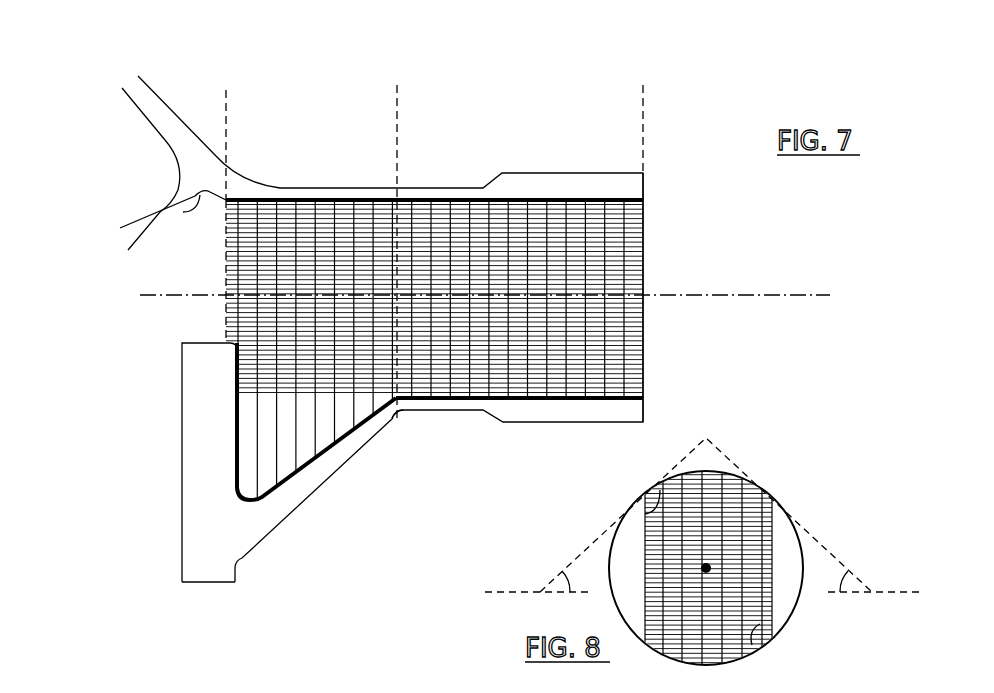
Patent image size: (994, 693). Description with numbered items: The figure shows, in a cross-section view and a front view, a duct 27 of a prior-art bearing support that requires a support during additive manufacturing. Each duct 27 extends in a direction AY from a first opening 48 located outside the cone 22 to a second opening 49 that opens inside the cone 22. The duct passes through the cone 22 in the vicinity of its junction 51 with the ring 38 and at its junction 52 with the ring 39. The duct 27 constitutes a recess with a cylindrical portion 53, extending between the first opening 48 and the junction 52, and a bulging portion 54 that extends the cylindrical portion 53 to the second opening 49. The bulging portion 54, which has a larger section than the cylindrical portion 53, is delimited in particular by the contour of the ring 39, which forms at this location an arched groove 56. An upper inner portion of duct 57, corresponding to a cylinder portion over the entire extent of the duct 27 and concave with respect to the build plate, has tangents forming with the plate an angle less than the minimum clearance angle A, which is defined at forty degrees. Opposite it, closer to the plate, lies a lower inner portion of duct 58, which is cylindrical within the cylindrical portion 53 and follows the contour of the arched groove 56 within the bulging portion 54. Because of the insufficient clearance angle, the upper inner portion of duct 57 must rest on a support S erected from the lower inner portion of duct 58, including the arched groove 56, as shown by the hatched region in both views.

In FIG. 7, the cone 22 is at (155, 80).
In FIG. 7, the duct 27 is at (712, 115).
In FIG. 7, the ring 38 is at (125, 219).
In FIG. 7, the ring 39 is at (170, 432).
In FIG. 7, the first opening 48 is at (643, 320).
In FIG. 7, the second opening 49 is at (226, 265).
In FIG. 7, the junction 51 is at (183, 212).
In FIG. 7, the junction 52 is at (399, 418).
In FIG. 7, the cylindrical portion 53 is at (397, 112).
In FIG. 7, the bulging portion 54 is at (397, 112).
In FIG. 7, the arched groove 56 is at (240, 504).
In FIG. 7, the upper inner portion of duct 57 is at (597, 203).
In FIG. 8, the upper inner portion of duct 57 is at (645, 514).
In FIG. 7, the lower inner portion of duct 58 is at (598, 395).
In FIG. 8, the lower inner portion of duct 58 is at (760, 624).
In FIG. 7, the support S is at (435, 263).
In FIG. 8, the support S is at (776, 551).
In FIG. 7, the direction AY is at (820, 291).
In FIG. 8, the direction AY is at (708, 564).
In FIG. 8, the minimum clearance angle A is at (703, 515).